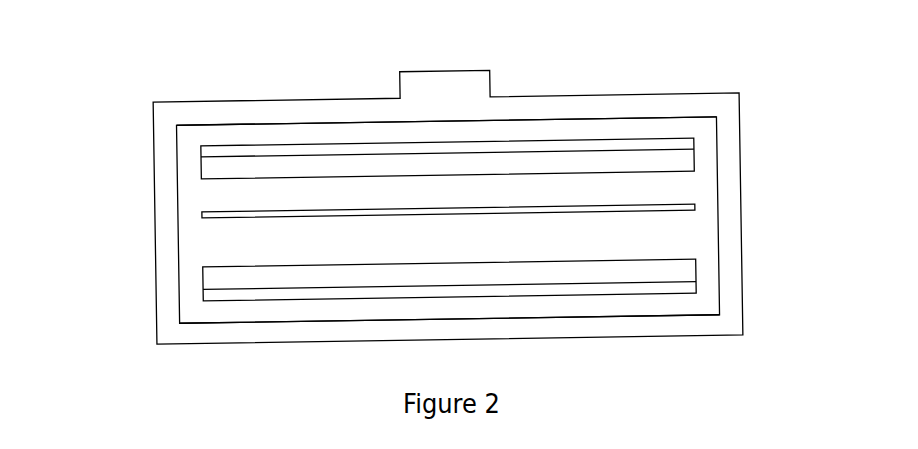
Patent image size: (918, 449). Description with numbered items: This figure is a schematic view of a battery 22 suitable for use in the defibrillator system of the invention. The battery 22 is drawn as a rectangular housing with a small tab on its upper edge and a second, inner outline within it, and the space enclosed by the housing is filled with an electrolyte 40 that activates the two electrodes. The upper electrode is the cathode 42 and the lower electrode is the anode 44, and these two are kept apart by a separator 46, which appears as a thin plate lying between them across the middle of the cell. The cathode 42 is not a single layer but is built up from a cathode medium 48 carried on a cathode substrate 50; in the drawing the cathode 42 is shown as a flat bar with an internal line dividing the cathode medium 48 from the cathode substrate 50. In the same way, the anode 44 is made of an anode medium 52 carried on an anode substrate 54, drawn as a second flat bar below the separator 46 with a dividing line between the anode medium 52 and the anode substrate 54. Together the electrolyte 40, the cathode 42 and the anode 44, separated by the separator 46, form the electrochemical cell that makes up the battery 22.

The battery 22 is at (298, 58).
The electrolyte 40 is at (303, 242).
The cathode 42 is at (602, 112).
The anode 44 is at (565, 327).
The separator 46 is at (583, 210).
The cathode medium 48 is at (695, 157).
The cathode substrate 50 is at (202, 147).
The anode medium 52 is at (696, 262).
The anode substrate 54 is at (695, 292).